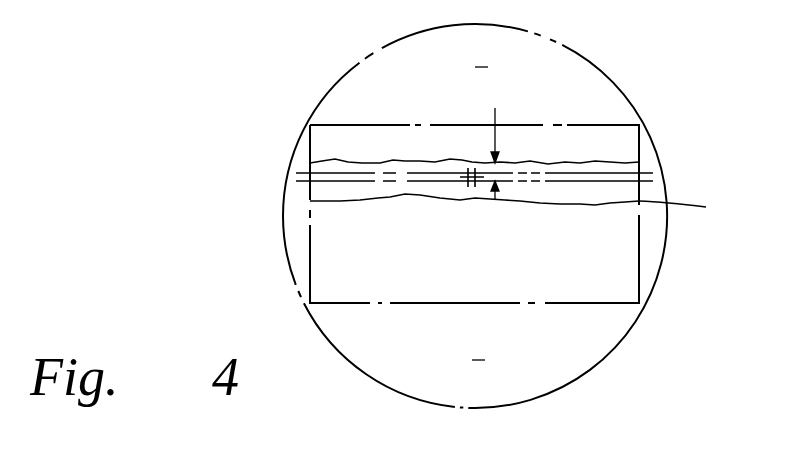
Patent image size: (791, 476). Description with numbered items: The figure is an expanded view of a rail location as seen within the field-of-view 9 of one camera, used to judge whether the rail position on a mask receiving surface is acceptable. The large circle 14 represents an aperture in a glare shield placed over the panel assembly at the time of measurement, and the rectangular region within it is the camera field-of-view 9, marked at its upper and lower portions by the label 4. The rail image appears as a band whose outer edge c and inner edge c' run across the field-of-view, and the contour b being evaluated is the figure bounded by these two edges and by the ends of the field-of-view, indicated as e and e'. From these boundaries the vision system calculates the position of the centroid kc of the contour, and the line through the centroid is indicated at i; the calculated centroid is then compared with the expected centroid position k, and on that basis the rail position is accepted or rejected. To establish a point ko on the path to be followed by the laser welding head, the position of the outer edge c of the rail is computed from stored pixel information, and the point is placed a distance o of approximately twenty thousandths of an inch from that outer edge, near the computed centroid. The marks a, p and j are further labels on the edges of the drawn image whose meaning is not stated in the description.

The circle 14 is at (353, 66).
The field-of-view 9 is at (578, 125).
The pane / panel 4 is at (480, 204).
The outer surface a is at (537, 70).
The contour b is at (613, 160).
The outer edge of the rail image c is at (444, 142).
The edge of the rail image c' is at (474, 233).
The end of the field-of-view e is at (682, 207).
The end of the field-of-view e' is at (428, 177).
The distance o is at (493, 143).
The expected centroid position k is at (477, 186).
The point on the path ko is at (467, 169).
The centroid of the contour kc is at (468, 188).
The point on upper line p is at (552, 162).
The line through the centroid i is at (410, 194).
The point on lower line j is at (592, 165).